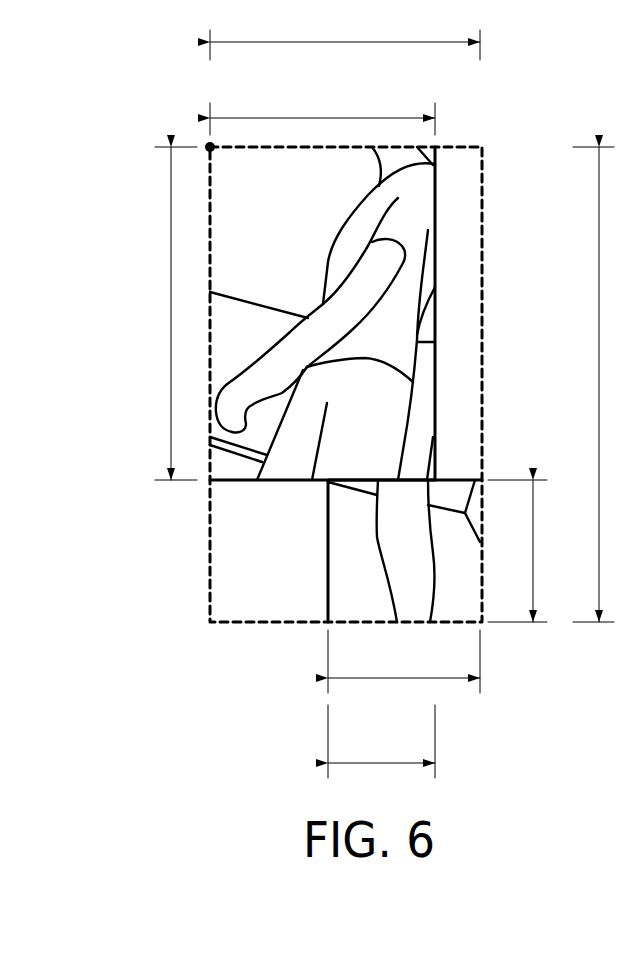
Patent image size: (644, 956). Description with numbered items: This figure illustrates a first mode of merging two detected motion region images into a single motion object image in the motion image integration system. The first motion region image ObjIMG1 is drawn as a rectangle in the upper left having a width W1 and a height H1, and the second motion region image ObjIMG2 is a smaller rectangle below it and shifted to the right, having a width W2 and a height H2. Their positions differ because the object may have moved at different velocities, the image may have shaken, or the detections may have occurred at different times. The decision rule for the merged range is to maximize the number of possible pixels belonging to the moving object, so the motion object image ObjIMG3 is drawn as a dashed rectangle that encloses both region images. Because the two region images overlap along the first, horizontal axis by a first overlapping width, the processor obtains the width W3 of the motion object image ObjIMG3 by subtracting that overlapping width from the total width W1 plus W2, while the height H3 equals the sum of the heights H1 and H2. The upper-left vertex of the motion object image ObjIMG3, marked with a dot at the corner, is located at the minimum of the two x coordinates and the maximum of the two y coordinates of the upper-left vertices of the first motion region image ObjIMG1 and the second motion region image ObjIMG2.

The first motion region image ObjIMG1 is at (437, 158).
The second motion region image ObjIMG2 is at (326, 600).
The motion object image ObjIMG3 is at (210, 511).
The width of the first motion region image W1 is at (322, 110).
The width of the second motion region image W2 is at (404, 661).
The width of the motion object image W3 is at (345, 35).
The height of the first motion region image H1 is at (164, 313).
The height of the second motion region image H2 is at (517, 551).
The height of the motion object image H3 is at (587, 384).